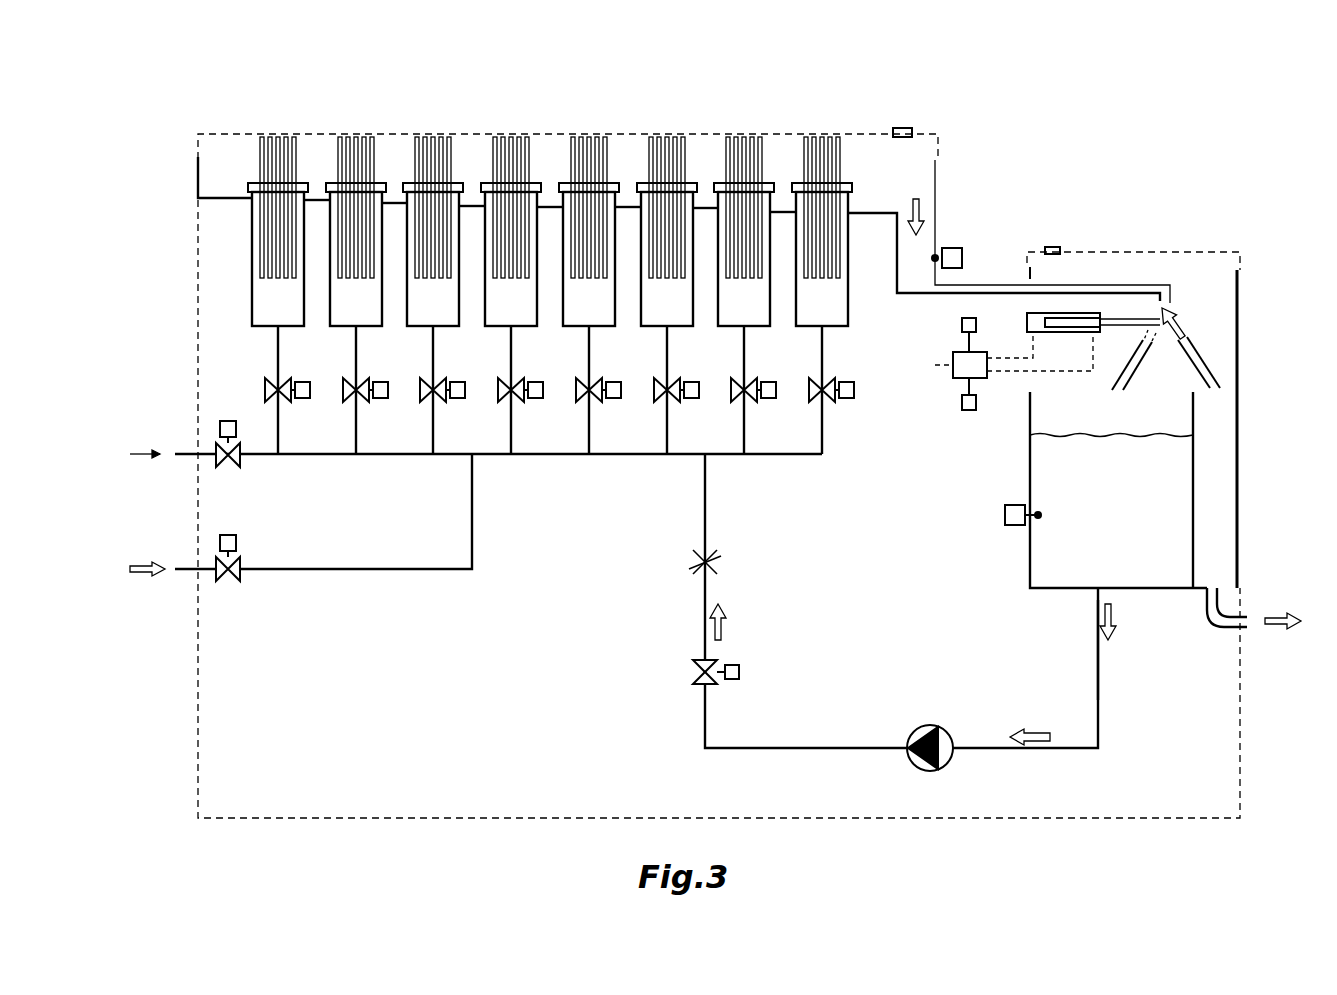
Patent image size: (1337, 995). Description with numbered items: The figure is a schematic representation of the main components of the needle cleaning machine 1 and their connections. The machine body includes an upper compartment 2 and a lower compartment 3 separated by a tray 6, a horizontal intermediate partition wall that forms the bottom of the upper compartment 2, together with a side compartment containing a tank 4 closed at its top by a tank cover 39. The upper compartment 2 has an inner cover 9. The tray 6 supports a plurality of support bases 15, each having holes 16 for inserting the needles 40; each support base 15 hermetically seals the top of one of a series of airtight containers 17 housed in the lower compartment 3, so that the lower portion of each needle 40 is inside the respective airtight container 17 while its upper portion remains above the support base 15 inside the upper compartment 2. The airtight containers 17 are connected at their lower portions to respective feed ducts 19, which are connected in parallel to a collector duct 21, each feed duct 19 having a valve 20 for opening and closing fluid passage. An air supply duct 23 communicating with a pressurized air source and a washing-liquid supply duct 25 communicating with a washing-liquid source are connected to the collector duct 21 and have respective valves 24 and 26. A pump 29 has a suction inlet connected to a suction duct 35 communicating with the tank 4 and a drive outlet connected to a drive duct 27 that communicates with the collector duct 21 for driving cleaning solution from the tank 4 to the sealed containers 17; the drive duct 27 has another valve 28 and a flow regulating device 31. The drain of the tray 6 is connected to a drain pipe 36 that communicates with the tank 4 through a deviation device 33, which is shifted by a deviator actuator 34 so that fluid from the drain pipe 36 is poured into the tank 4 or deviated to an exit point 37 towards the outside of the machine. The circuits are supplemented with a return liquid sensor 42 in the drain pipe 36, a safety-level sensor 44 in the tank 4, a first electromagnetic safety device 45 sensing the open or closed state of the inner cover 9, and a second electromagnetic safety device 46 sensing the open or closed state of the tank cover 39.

The needle cleaning machine 1 is at (1122, 102).
The upper compartment 2 is at (230, 157).
The lower compartment 3 is at (470, 685).
The tank 4 is at (1178, 500).
The tray 6 is at (703, 207).
The inner cover 9 is at (318, 133).
The support base 15 is at (455, 185).
The hole 16 is at (415, 185).
The airtight container 17 is at (260, 302).
The feed duct 19 is at (275, 358).
The valve 20 is at (592, 402).
The collector duct 21 is at (532, 457).
The air supply duct 23 is at (185, 457).
The valve 24 is at (240, 460).
The washing-liquid supply duct 25 is at (185, 571).
The valve 26 is at (233, 582).
The drive duct 27 is at (705, 717).
The valve 28 is at (702, 665).
The pump 29 is at (920, 728).
The flow regulating device 31 is at (712, 563).
The deviation device 33 is at (1172, 318).
The deviator actuator 34 is at (1087, 313).
The suction duct 35 is at (1100, 692).
The drain pipe 36 is at (993, 288).
The exit point 37 is at (1247, 612).
The tank cover 39 is at (1112, 389).
The needle 40 is at (650, 165).
The return liquid sensor 42 is at (950, 248).
The safety-level sensor 44 is at (1005, 512).
The first electromagnetic safety device 45 is at (901, 127).
The second electromagnetic safety device 46 is at (1052, 246).